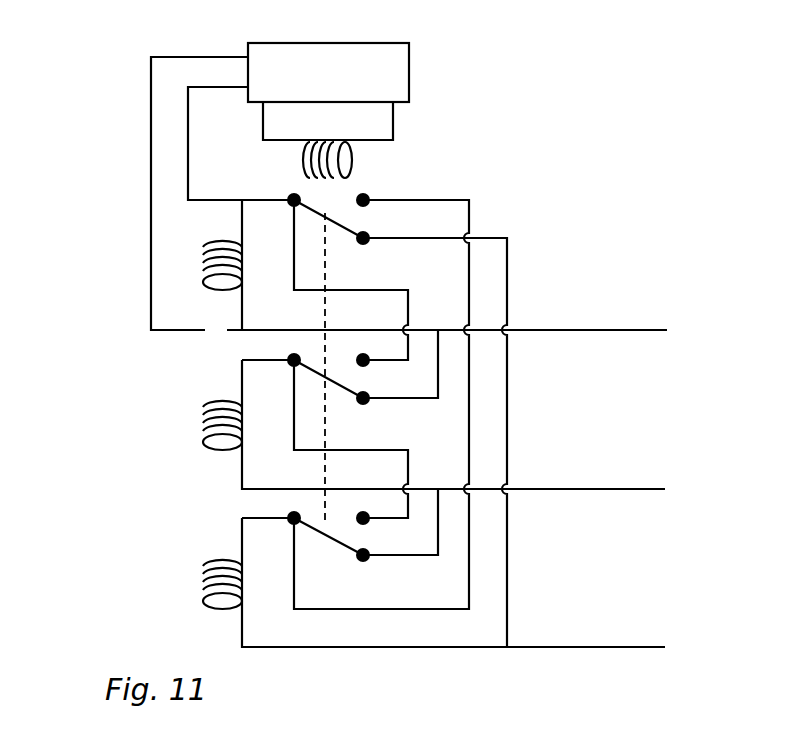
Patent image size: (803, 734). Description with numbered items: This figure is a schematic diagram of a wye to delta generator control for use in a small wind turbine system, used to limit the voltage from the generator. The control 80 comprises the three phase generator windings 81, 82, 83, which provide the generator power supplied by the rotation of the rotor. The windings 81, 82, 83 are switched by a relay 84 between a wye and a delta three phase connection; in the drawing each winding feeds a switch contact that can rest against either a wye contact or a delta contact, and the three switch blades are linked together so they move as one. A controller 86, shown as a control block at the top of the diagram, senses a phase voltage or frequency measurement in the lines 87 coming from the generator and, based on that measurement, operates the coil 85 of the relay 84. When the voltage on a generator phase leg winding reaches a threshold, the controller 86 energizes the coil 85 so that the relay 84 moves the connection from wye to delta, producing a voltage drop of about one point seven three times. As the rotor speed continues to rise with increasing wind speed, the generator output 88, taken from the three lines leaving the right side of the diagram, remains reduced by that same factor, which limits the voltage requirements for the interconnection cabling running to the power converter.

The control 80 is at (91, 44).
The three phase generator winding 81 is at (204, 257).
The three phase generator winding 82 is at (202, 416).
The three phase generator winding 83 is at (202, 576).
The relay 84 is at (326, 268).
The coil 85 is at (354, 160).
The controller 86 is at (409, 67).
The lines 87 is at (205, 70).
The generator output 88 is at (705, 416).